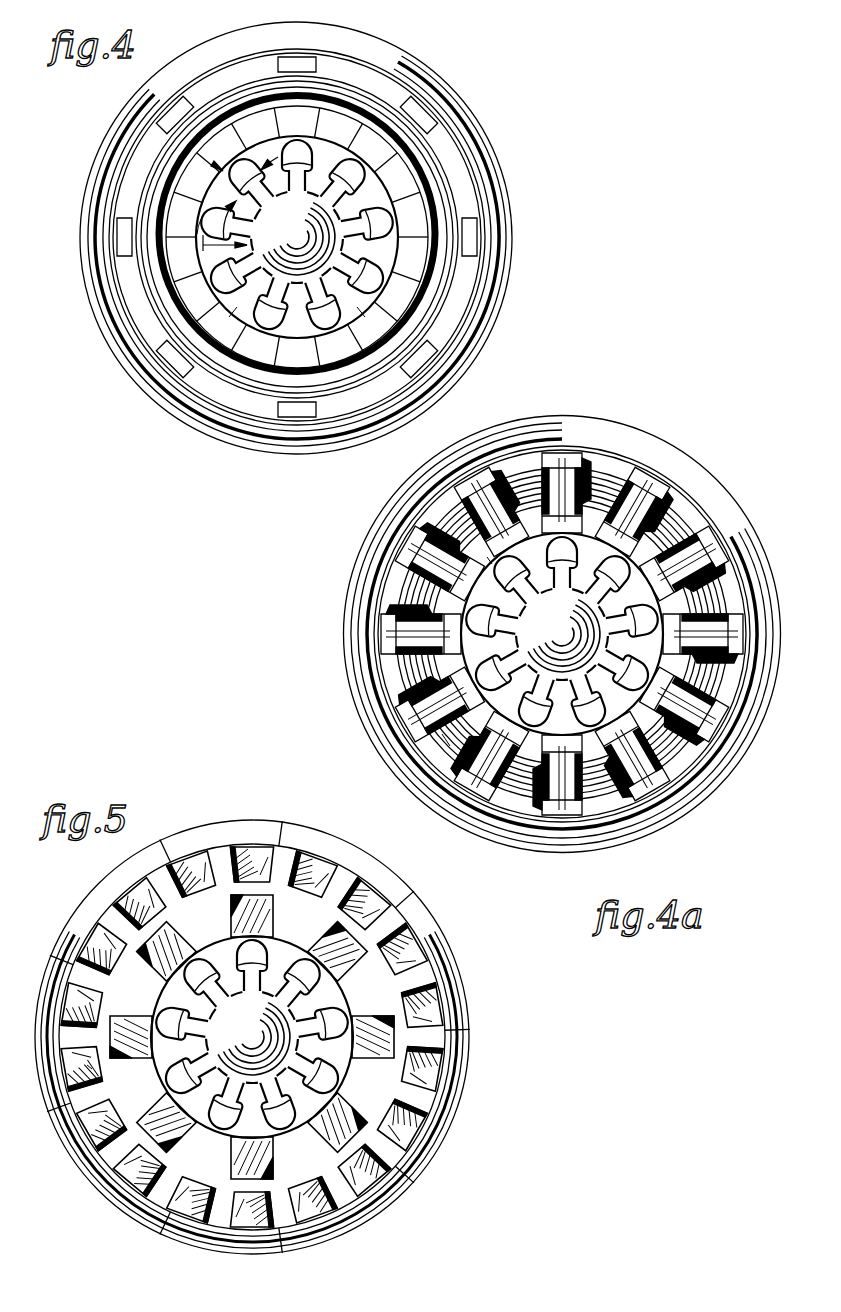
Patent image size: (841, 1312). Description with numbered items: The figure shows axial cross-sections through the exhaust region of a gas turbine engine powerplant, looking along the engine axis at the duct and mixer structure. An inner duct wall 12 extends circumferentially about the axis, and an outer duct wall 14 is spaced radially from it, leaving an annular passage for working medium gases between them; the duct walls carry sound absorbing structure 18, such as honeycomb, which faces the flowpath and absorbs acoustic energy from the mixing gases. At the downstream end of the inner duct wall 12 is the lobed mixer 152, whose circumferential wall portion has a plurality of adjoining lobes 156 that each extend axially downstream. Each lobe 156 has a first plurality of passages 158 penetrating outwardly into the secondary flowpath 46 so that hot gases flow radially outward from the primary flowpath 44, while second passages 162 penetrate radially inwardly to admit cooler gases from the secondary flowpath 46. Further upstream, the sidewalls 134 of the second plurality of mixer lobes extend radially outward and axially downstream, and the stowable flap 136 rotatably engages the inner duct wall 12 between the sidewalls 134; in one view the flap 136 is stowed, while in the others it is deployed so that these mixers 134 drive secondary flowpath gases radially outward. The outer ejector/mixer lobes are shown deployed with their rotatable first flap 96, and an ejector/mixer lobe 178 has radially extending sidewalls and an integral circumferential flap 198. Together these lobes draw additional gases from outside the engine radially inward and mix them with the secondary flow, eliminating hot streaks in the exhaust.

In FIG. 4, the inner duct wall 12 is at (287, 237).
In FIG. 4A, the inner duct wall 12 is at (543, 630).
In FIG. 5, the inner duct wall 12 is at (240, 1037).
In FIG. 4, the outer duct wall 14 is at (131, 171).
In FIG. 4A, the outer duct wall 14 is at (562, 634).
In FIG. 5, the outer duct wall 14 is at (262, 1037).
In FIG. 4, the sound absorbing structure 18 is at (239, 237).
In FIG. 4A, the sound absorbing structure 18 is at (408, 535).
In FIG. 4, the primary flowpath 44 is at (297, 273).
In FIG. 4, the secondary flowpath 46 is at (330, 236).
In FIG. 5, the first flap 96 is at (119, 1095).
In FIG. 4, the sidewalls 134 is at (280, 234).
In FIG. 4A, the stowable flap 136 is at (384, 753).
In FIG. 5, the stowable flap 136 is at (253, 1037).
In FIG. 4, the lobed mixer 152 is at (164, 186).
In FIG. 4, the lobe 156 is at (355, 349).
In FIG. 4, the first plurality of passages 158 is at (114, 213).
In FIG. 4, the second passages 162 is at (228, 346).
In FIG. 4A, the ejector/mixer lobe 178 is at (520, 634).
In FIG. 4, the flap 198 is at (297, 237).